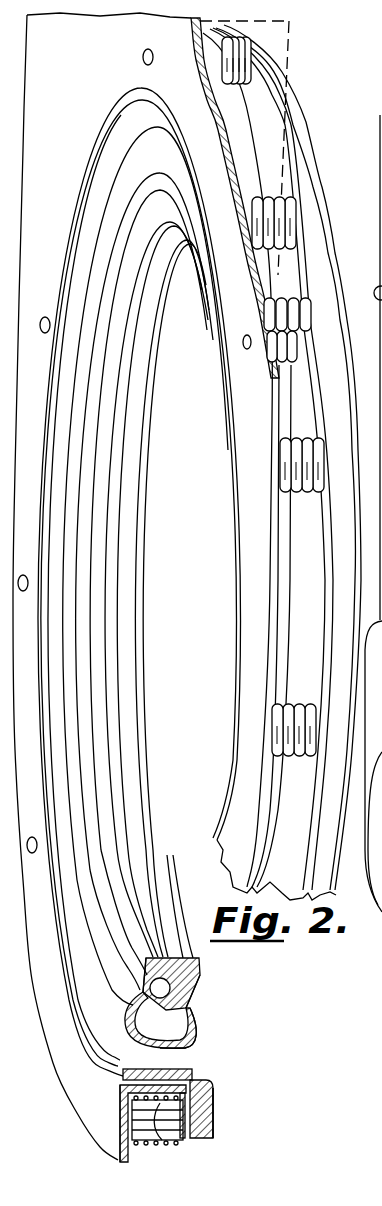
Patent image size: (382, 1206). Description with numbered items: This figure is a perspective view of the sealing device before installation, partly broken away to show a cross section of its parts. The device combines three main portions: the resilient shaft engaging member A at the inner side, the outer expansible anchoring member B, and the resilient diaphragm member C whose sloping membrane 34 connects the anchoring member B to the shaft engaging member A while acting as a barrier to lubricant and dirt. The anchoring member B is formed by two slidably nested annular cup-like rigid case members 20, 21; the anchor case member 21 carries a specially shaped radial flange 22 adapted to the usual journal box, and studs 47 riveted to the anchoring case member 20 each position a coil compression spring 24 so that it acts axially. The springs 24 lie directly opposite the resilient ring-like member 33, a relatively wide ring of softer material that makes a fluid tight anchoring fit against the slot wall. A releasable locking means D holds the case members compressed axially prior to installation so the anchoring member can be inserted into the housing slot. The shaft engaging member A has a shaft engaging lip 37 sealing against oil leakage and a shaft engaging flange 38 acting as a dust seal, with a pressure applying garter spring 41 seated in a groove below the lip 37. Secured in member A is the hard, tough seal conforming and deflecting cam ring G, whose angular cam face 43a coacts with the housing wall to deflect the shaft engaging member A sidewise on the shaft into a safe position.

The radial flange 22 is at (81, 73).
The springs 24 is at (245, 60).
The studs 47 is at (240, 77).
The releasable locking means D is at (268, 314).
The shaft engaging lip 37 is at (165, 958).
The shaft engaging flange 38 is at (200, 960).
The seal conforming and deflecting cam ring G is at (205, 982).
The angular cam face 43a is at (262, 1003).
The resilient shaft engaging member A is at (138, 969).
The garter spring 41 is at (130, 1012).
The sloping membrane 34 is at (126, 1042).
The resilient diaphragm member C is at (203, 1046).
The anchoring case member 20 is at (195, 1072).
The resilient ring-like member 33 is at (214, 1100).
The anchor case member 21 is at (122, 1130).
The outer expansible anchoring member B is at (222, 1087).